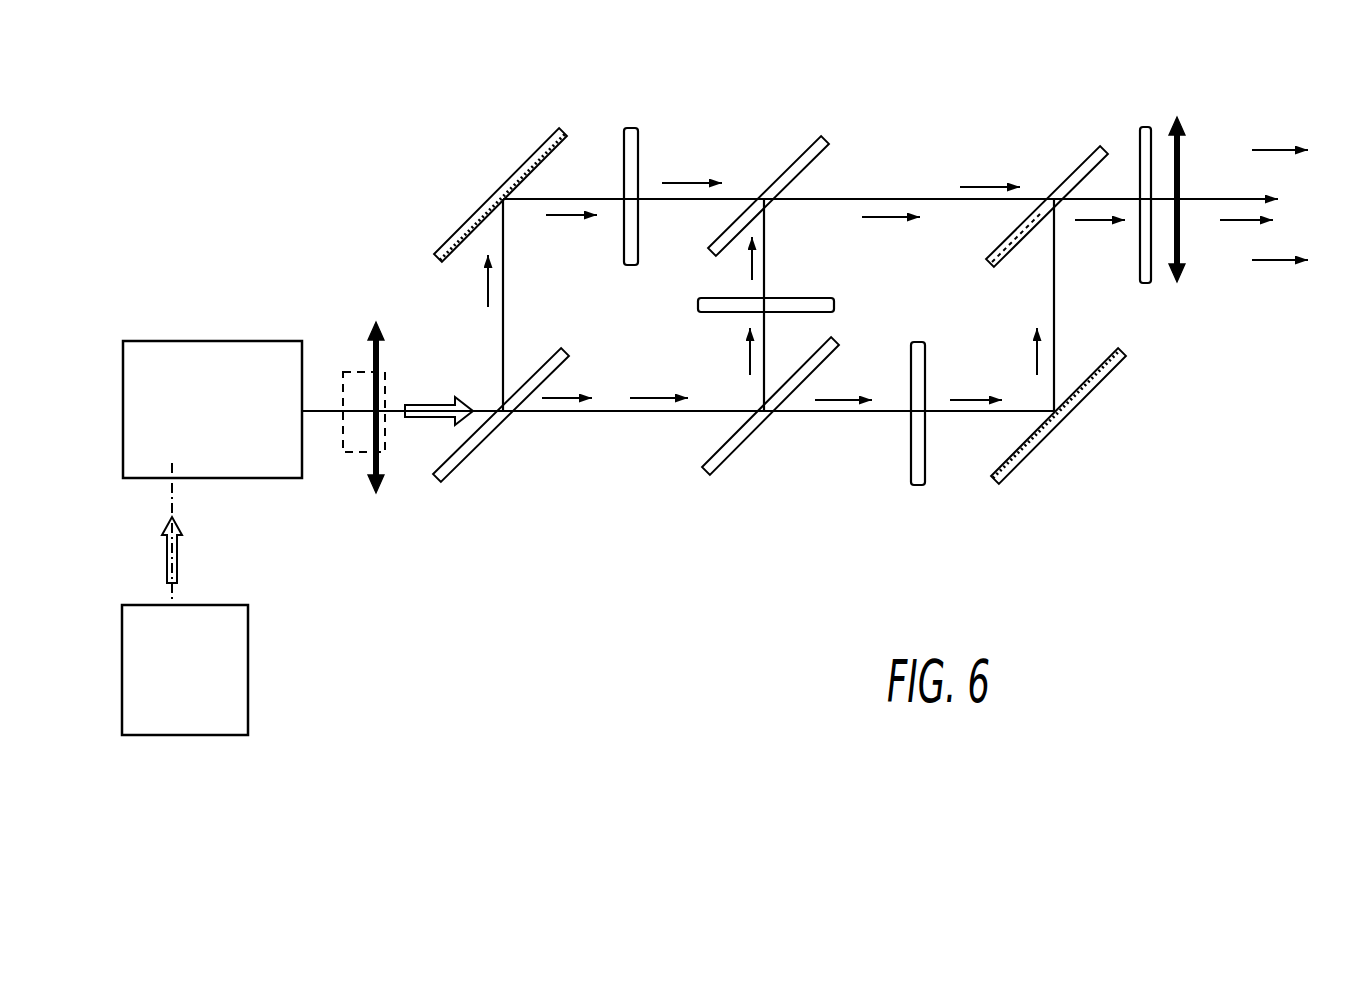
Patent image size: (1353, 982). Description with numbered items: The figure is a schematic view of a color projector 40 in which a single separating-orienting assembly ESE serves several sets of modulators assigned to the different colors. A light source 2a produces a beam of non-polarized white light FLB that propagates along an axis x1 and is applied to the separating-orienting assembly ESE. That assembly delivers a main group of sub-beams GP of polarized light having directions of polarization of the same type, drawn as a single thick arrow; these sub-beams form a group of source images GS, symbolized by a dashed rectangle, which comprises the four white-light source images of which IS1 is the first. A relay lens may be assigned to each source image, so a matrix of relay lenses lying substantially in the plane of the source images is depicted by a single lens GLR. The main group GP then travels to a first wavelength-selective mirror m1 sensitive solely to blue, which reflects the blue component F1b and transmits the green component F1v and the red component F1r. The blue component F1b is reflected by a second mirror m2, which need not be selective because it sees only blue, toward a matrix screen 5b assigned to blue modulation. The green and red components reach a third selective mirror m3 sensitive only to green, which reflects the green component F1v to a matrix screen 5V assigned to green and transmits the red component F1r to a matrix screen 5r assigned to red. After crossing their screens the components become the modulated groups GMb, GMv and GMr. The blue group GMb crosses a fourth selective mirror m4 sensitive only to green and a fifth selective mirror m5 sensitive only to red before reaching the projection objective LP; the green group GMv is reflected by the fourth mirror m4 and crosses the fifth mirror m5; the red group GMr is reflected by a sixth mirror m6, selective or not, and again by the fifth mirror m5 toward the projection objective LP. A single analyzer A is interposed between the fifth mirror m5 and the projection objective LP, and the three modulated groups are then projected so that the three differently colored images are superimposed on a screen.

The color projector 40 is at (316, 106).
The separating-orienting assembly ESE is at (204, 341).
The light source 2a is at (248, 660).
The axis x1 is at (170, 512).
The beam of non-polarized white light FLB is at (177, 562).
The group of source images GS is at (346, 454).
The source image IS1 is at (438, 575).
The group of relay lenses GLR is at (372, 350).
The main group of sub-beams GP is at (425, 420).
The first wavelength-selective mirror m1 is at (465, 458).
The second mirror m2 is at (521, 160).
The third selective mirror m3 is at (735, 455).
The fourth selective mirror m4 is at (814, 150).
The fifth selective mirror m5 is at (1085, 153).
The sixth mirror m6 is at (1030, 455).
The matrix screen 5b is at (630, 128).
The matrix screen 5V is at (833, 284).
The matrix screen 5r is at (927, 478).
The analyzer A is at (1145, 127).
The projection objective LP is at (1183, 131).
The blue component F1b is at (565, 219).
The green component F1v is at (555, 397).
The red component F1r is at (654, 400).
The group of modulated beams GMb is at (1277, 150).
The group of modulated beams GMv is at (885, 222).
The group of modulated beams GMr is at (1092, 222).